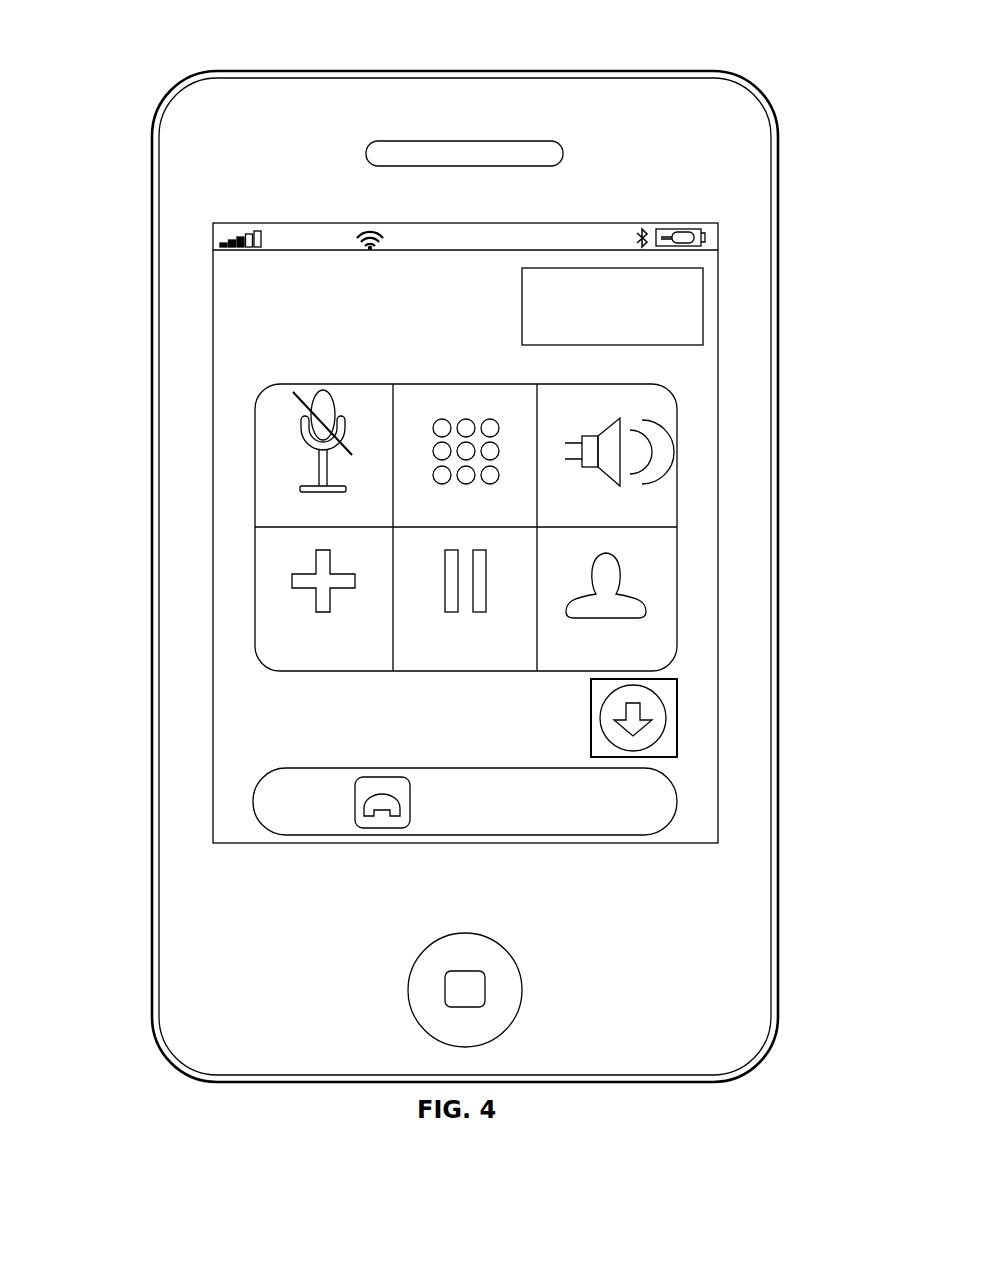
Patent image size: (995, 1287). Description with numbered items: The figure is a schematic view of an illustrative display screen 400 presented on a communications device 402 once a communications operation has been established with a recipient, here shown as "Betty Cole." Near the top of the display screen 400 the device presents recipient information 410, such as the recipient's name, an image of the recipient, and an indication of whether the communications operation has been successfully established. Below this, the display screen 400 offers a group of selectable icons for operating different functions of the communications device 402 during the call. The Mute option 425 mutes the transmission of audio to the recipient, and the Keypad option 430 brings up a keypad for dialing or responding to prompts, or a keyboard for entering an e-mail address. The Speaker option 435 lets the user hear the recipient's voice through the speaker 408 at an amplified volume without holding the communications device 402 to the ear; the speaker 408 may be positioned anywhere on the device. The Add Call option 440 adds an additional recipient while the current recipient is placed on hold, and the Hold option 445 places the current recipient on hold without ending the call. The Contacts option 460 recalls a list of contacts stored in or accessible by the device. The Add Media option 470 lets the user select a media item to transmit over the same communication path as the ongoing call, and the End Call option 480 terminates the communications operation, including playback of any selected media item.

The display screen 400 is at (140, 55).
The communications device 402 is at (314, 70).
The speaker 408 is at (366, 152).
The recipient information 410 is at (222, 290).
The Mute option 425 is at (282, 453).
The Keypad option 430 is at (512, 407).
The Speaker option 435 is at (660, 453).
The Add Call option 440 is at (280, 576).
The Hold option 445 is at (416, 664).
The Contacts option 460 is at (660, 582).
The Add Media option 470 is at (677, 718).
The End Call option 480 is at (253, 803).